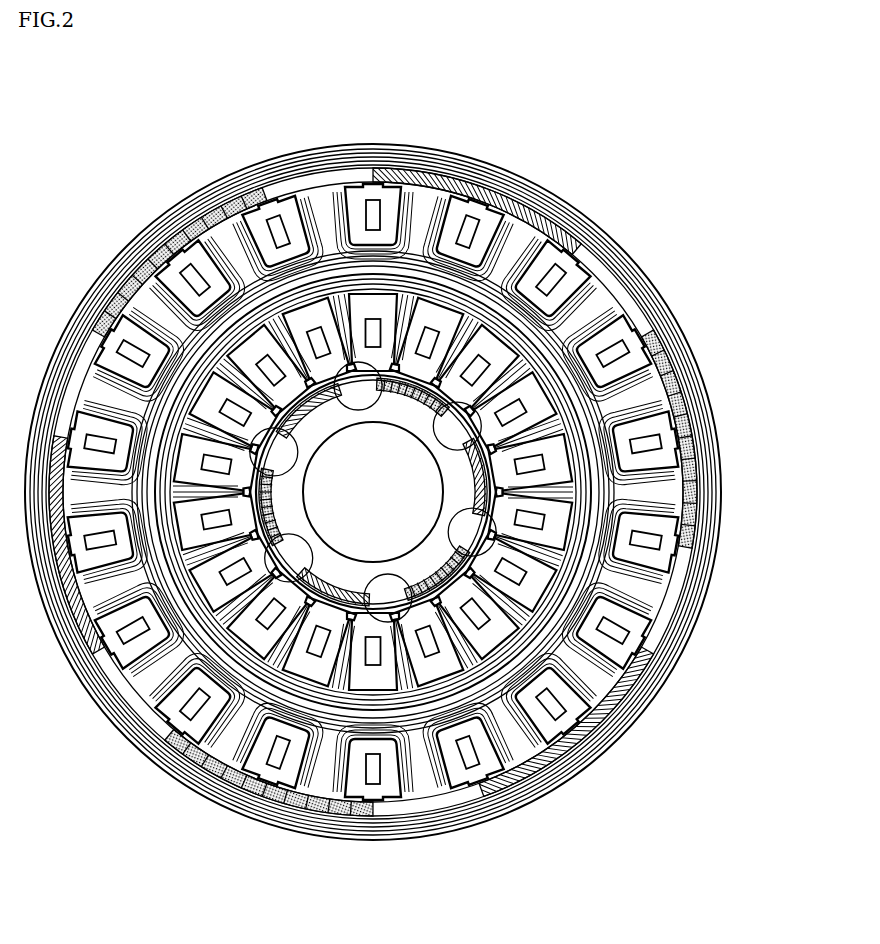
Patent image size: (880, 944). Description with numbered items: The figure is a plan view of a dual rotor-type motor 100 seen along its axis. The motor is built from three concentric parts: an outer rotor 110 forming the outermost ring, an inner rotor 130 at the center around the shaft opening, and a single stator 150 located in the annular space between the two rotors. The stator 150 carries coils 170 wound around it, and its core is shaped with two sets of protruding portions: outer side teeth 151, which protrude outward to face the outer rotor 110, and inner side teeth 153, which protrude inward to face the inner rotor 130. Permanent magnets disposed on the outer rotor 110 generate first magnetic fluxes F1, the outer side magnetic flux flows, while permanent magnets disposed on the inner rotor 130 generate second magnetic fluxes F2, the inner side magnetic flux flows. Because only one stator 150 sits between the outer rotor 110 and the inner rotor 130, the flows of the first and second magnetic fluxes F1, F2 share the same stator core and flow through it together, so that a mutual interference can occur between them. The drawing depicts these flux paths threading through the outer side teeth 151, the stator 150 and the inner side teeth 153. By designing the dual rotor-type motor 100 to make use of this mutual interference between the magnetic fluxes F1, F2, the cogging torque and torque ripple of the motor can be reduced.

The dual rotor-type motor 100 is at (152, 158).
The outer rotor 110 is at (409, 492).
The inner rotor 130 is at (517, 511).
The stator 150 is at (439, 490).
The outer side teeth 151 is at (423, 492).
The inner side teeth 153 is at (408, 490).
The coils 170 is at (454, 512).
The first magnetic fluxes F1 is at (373, 583).
The second magnetic fluxes F2 is at (373, 602).